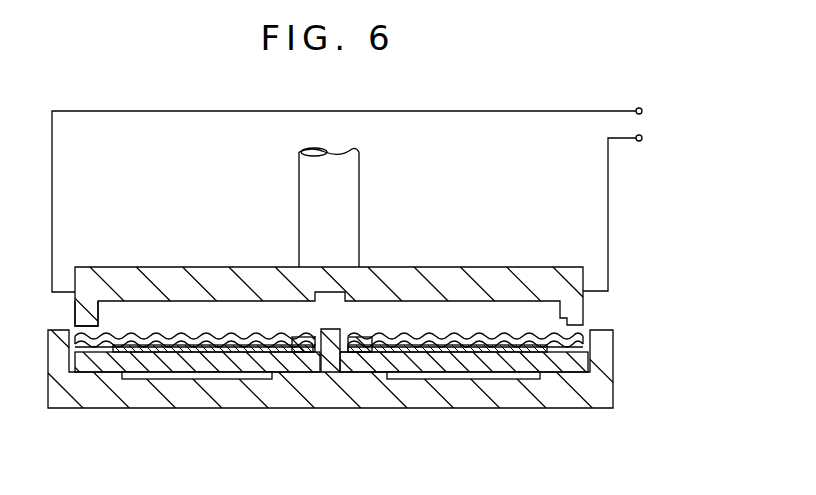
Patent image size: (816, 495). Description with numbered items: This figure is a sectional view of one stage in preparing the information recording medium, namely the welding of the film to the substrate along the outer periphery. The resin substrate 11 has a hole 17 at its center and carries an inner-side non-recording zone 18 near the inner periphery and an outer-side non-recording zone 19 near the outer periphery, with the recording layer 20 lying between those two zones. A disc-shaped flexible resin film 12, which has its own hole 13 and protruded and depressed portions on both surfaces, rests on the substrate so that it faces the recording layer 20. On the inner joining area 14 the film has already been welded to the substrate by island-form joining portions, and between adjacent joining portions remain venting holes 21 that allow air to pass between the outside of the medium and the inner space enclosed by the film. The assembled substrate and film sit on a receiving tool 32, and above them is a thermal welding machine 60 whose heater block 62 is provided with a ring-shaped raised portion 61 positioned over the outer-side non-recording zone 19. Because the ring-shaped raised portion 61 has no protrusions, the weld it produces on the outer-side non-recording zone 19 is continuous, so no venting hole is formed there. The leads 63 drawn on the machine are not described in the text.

The resin substrate 11 is at (397, 363).
The flexible resin film 12 is at (220, 345).
The hole 13 is at (345, 338).
The inner joining area 14 is at (303, 352).
The hole 17 is at (332, 370).
The inner-side non-recording zone 18 is at (290, 337).
The outer-side non-recording zone 19 is at (100, 340).
The recording layer 20 is at (458, 350).
The venting hole 21 is at (358, 350).
The receiving tool 32 is at (145, 402).
The thermal welding machine 60 is at (285, 212).
The ring-shaped raised portion 61 is at (85, 320).
The heater block 62 is at (514, 272).
The lead wire 63 is at (488, 111).